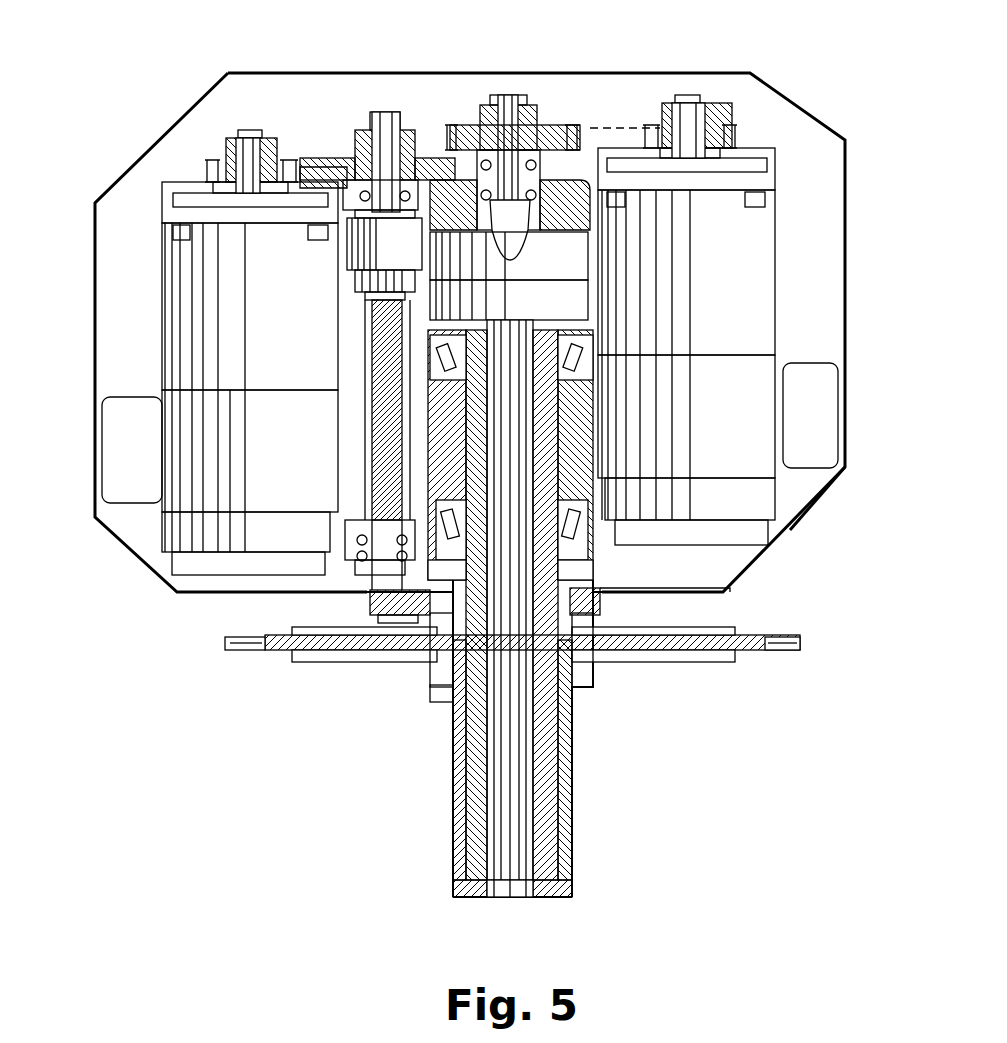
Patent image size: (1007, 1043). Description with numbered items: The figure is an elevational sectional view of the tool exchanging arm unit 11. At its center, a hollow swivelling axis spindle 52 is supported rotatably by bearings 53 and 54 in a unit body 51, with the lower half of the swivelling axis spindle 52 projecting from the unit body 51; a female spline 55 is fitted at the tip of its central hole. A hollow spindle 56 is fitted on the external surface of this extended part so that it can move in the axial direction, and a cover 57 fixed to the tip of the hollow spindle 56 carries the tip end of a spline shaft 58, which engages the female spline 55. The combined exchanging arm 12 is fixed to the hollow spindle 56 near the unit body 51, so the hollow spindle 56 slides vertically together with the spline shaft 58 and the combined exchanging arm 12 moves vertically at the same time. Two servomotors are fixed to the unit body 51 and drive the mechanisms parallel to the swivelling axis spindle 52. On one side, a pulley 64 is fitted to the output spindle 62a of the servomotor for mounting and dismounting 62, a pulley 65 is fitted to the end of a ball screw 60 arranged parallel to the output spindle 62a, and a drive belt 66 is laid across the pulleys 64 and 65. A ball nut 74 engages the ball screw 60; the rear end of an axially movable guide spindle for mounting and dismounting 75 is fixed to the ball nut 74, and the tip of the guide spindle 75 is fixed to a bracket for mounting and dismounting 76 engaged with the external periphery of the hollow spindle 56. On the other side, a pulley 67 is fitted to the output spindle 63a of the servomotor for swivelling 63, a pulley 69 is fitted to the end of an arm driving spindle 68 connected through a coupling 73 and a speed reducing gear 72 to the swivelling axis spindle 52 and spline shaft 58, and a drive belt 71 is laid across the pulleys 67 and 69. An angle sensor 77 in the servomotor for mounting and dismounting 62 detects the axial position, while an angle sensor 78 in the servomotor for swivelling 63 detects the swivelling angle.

The tool exchanging arm unit 11 is at (858, 192).
The combined exchanging arm 12 is at (780, 635).
The unit body 51 is at (590, 222).
The swivelling axis spindle 52 is at (590, 428).
The bearing 53 is at (590, 345).
The bearing 54 is at (600, 512).
The female spline 55 is at (548, 810).
The hollow spindle 56 is at (560, 712).
The cover 57 is at (560, 885).
The spline shaft 58 is at (520, 755).
The ball screw 60 is at (375, 418).
The servomotor for mounting and dismounting 62 is at (180, 306).
The output spindle 62a is at (252, 158).
The servomotor for swivelling 63 is at (760, 312).
The output spindle 63a is at (690, 128).
The pulley 64 is at (210, 158).
The pulley 65 is at (340, 150).
The drive belt 66 is at (285, 135).
The pulley 67 is at (655, 135).
The arm driving spindle 68 is at (500, 95).
The pulley 69 is at (450, 150).
The drive belt 71 is at (600, 130).
The speed reducing gear 72 is at (585, 300).
The coupling 73 is at (585, 262).
The ball nut 74 is at (375, 265).
The guide spindle for mounting and dismounting 75 is at (372, 612).
The bracket for mounting and dismounting 76 is at (605, 606).
The angle sensor 77 is at (190, 565).
The angle sensor 78 is at (786, 528).